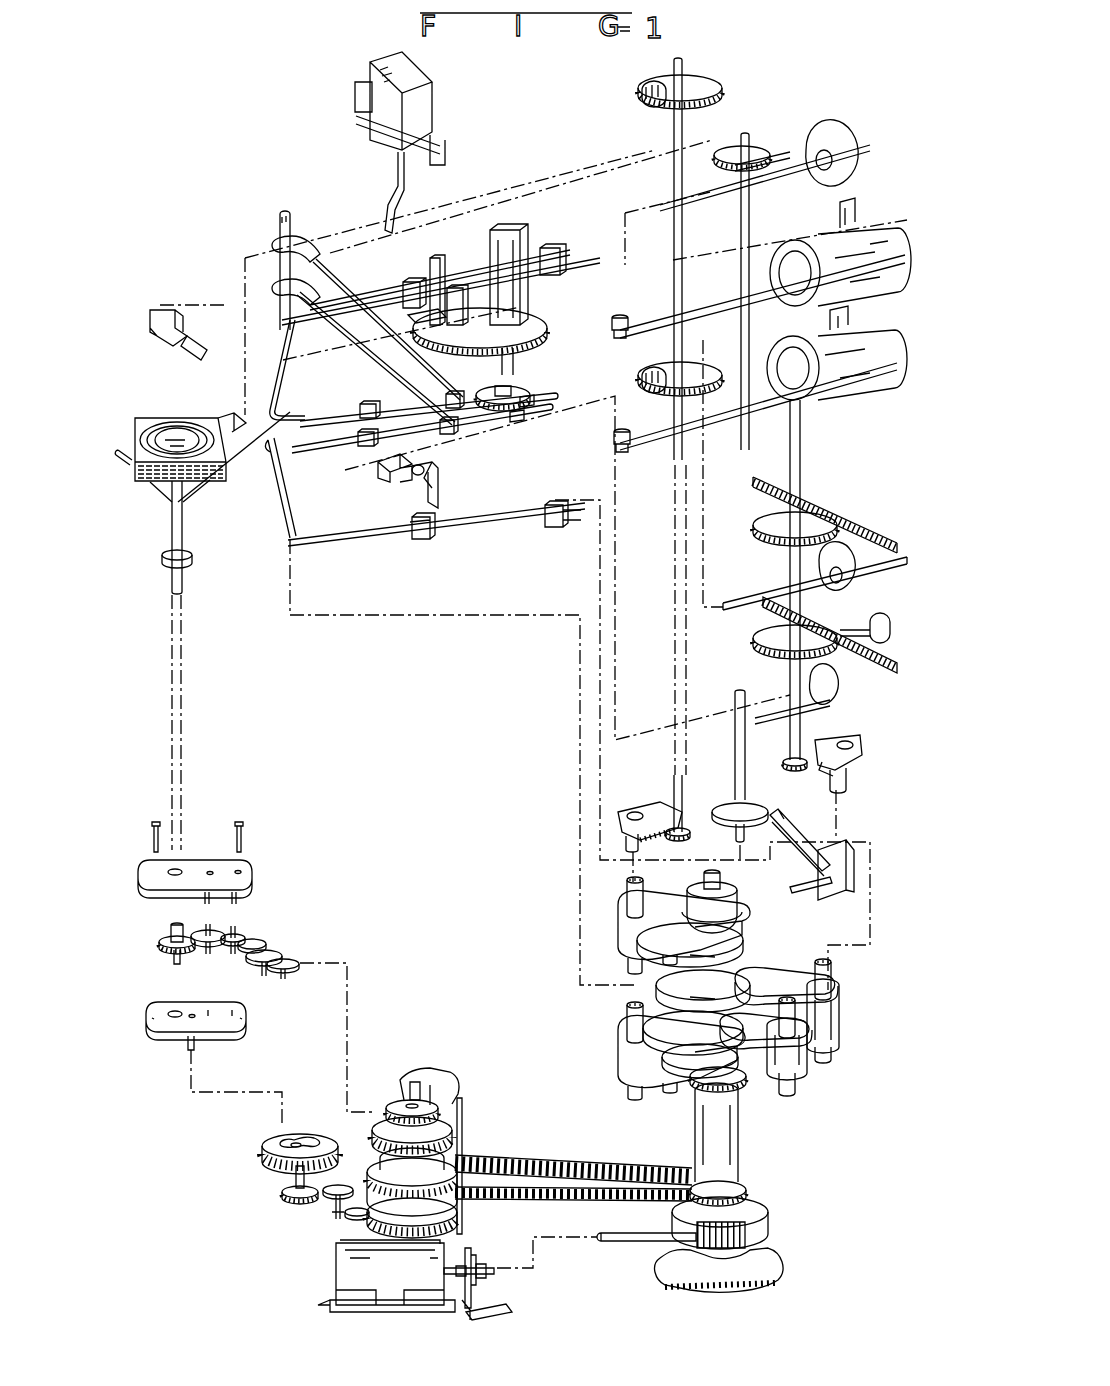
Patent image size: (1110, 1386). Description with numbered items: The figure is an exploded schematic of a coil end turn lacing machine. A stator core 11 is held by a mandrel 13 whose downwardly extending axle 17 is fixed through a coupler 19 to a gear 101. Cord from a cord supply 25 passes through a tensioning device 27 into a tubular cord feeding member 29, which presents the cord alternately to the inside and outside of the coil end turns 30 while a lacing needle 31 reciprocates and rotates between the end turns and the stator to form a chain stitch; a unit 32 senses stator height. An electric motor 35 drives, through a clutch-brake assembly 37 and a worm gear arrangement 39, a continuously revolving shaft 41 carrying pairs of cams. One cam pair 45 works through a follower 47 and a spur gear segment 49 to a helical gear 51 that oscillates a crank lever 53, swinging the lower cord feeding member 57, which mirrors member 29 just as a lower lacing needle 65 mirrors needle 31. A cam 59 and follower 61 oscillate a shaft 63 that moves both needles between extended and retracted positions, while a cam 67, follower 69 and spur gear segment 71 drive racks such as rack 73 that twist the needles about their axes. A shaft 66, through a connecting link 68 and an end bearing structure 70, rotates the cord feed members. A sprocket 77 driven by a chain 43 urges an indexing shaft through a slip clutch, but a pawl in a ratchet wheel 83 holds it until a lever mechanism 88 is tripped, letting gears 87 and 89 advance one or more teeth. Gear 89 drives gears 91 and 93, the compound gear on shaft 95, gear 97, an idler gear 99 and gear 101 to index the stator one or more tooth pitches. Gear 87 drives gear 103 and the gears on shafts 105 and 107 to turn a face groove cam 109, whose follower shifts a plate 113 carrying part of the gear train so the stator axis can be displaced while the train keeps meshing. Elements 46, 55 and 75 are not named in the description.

The stator core 11 is at (150, 418).
The mandrel 13 is at (172, 430).
The axle 17 is at (180, 526).
The coupler 19 is at (192, 553).
The cord supply 25 is at (875, 235).
The tensioning device 27 is at (618, 320).
The tubular cord feeding member 29 is at (280, 372).
The end turns 30 is at (182, 424).
The lacing needle 31 is at (298, 405).
The stator height sensing unit 32 is at (415, 82).
The electric motor 35 is at (358, 1272).
The clutch-brake assembly 37 is at (472, 1282).
The worm gear arrangement 39 is at (680, 1275).
The shaft 41 is at (732, 1142).
The chain 43 is at (545, 1162).
The pair of cams 45 is at (740, 926).
The cam disk 46 is at (738, 960).
The follower 47 is at (628, 928).
The spur gear segment 49 is at (652, 808).
The helical gear 51 is at (640, 380).
The crank lever 53 is at (440, 472).
The rod 55 is at (468, 522).
The tubular cord feeding member 57 is at (276, 482).
The cam 59 is at (742, 1086).
The follower 61 is at (625, 1066).
The shaft 63 is at (285, 230).
The lacing needle 65 is at (300, 452).
The shaft 66 is at (740, 756).
The cam 67 is at (770, 966).
The connecting link 68 is at (798, 822).
The follower 69 is at (840, 1014).
The end bearing structure 70 is at (832, 858).
The spur gear segment 71 is at (852, 745).
The rack 73 is at (850, 528).
The rod 75 is at (728, 612).
The sprocket 77 is at (452, 1166).
The ratchet wheel 83 is at (372, 1140).
The gear 87 is at (440, 1226).
The lever mechanism 88 is at (462, 1220).
The gear 89 is at (402, 1100).
The gear 91 is at (290, 962).
The gear 93 is at (272, 952).
The shaft 95 is at (258, 942).
The gear 97 is at (240, 936).
The idler gear 99 is at (214, 932).
The gear 101 is at (166, 934).
The gear 103 is at (352, 1226).
The shaft 105 is at (322, 1200).
The shaft 107 is at (284, 1188).
The face groove cam 109 is at (311, 1140).
The plate 113 is at (160, 1014).